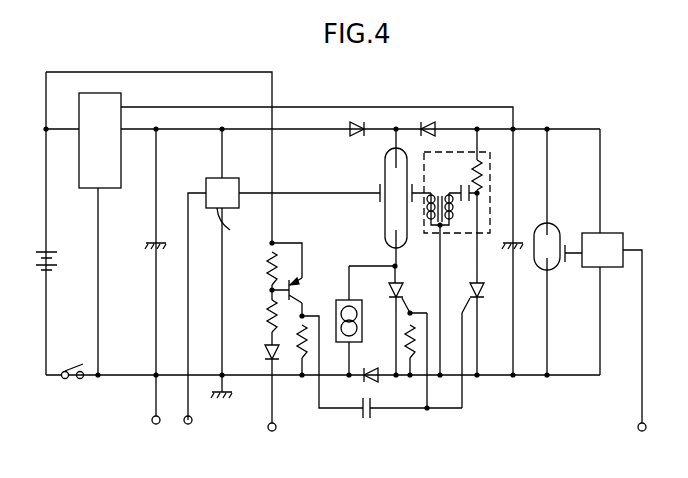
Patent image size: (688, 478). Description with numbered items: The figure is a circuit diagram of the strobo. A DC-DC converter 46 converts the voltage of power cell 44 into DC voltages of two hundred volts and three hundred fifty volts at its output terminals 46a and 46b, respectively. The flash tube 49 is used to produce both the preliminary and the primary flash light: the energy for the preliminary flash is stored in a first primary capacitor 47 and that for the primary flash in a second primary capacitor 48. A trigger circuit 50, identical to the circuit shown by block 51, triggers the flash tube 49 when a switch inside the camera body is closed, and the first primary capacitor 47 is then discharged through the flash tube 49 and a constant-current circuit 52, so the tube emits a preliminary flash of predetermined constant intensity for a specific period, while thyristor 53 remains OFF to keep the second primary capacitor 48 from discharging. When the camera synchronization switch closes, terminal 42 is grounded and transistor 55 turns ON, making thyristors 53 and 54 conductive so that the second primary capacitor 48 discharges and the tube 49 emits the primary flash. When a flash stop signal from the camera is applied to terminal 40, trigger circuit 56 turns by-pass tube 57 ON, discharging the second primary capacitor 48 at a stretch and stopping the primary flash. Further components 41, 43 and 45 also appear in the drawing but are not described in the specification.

The terminal 40 is at (636, 358).
The terminal 41 is at (198, 438).
The terminal 42 is at (273, 443).
The terminal 43 is at (156, 418).
The power cell 44 is at (57, 258).
The power switch 45 is at (70, 379).
The DC-DC converter 46 is at (79, 188).
The output terminal 46a is at (133, 132).
The output terminal 46b is at (136, 106).
The first primary capacitor 47 is at (151, 240).
The second primary capacitor 48 is at (515, 240).
The flash tube 49 is at (385, 172).
The trigger circuit 50 is at (230, 190).
The block 51 is at (440, 233).
The constant-current circuit 52 is at (345, 296).
The thyristor 53 is at (406, 278).
The thyristor 54 is at (482, 285).
The transistor 55 is at (302, 290).
The trigger circuit 56 is at (618, 234).
The by-pass tube 57 is at (554, 263).